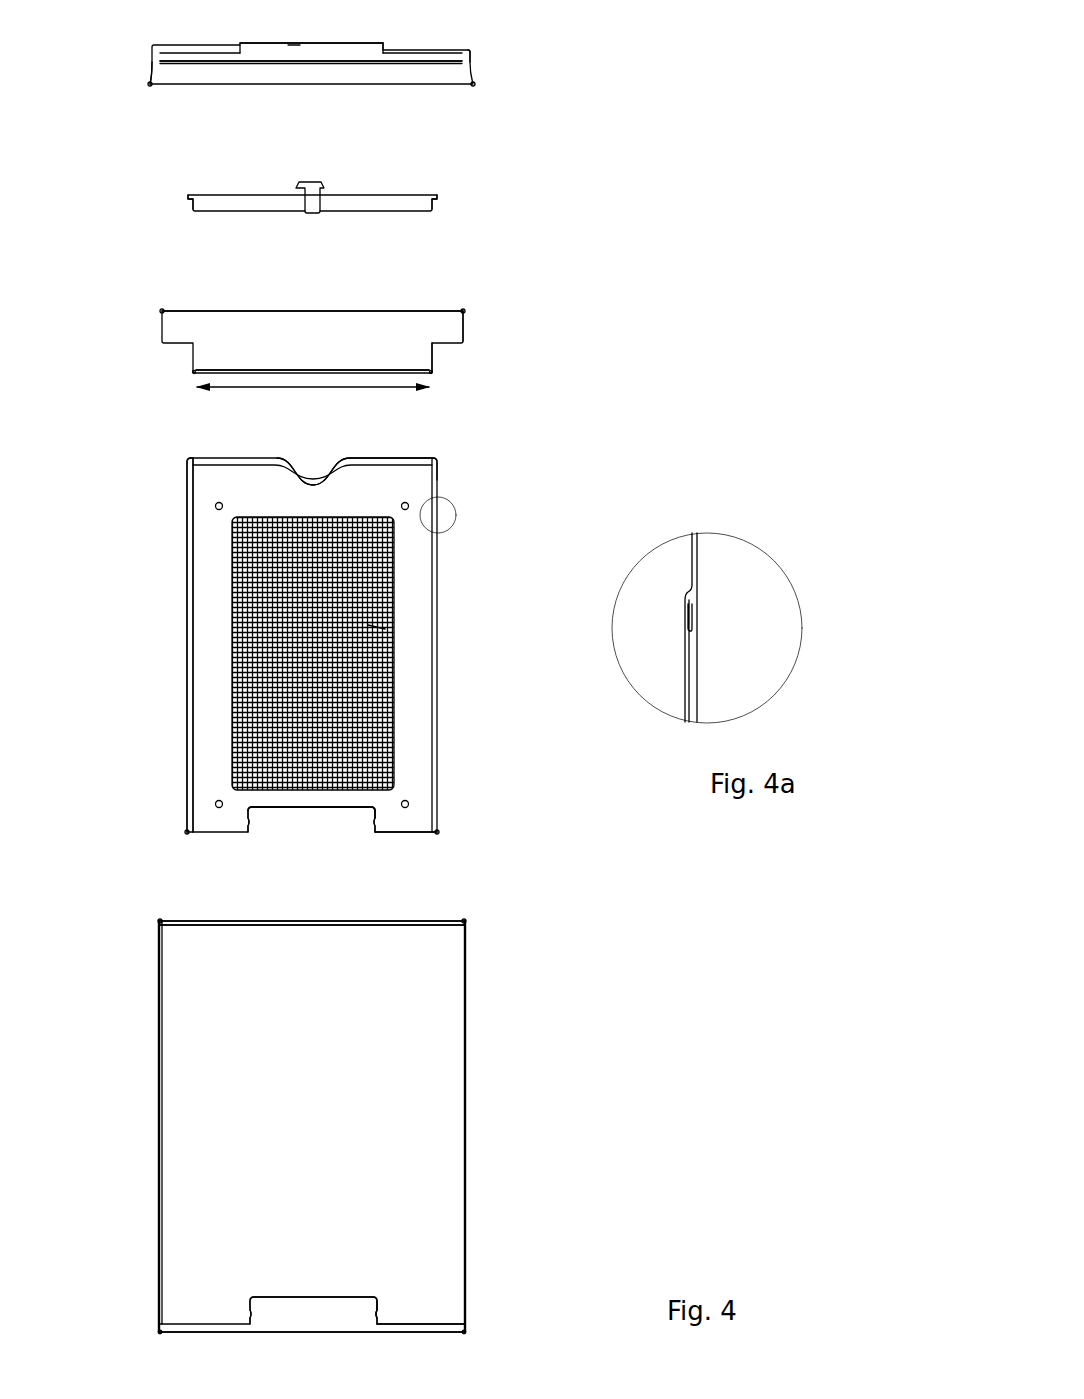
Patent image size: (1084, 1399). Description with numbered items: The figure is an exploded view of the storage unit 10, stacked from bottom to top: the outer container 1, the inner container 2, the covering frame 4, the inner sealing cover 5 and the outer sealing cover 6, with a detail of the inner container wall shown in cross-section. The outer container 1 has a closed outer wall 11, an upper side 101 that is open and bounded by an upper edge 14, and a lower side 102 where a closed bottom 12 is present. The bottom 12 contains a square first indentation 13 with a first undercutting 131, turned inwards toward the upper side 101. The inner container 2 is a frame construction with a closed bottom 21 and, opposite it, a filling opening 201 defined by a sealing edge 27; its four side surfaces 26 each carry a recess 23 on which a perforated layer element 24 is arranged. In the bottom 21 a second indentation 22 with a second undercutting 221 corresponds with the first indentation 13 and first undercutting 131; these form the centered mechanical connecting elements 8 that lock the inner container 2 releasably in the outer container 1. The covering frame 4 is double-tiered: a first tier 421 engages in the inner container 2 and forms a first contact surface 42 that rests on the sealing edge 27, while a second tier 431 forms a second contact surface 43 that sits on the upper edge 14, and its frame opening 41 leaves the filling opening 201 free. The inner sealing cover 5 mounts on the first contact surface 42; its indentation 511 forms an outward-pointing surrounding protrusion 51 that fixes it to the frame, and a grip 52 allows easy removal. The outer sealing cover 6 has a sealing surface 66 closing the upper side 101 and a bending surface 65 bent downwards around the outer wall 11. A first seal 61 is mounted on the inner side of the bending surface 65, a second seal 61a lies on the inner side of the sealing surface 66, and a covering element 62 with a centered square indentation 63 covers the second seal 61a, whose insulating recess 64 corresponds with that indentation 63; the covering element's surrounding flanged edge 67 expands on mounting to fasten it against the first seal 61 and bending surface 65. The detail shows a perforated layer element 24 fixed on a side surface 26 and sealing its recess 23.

In FIG. 4, the outer container 1 is at (625, 1080).
In FIG. 4, the inner container 2 is at (548, 532).
In FIG. 4, the covering frame 4 is at (580, 340).
In FIG. 4, the inner sealing cover 5 is at (515, 195).
In FIG. 4, the outer sealing cover 6 is at (636, 45).
In FIG. 4, the connecting elements 8 is at (325, 807).
In FIG. 4, the storage unit 10 is at (715, 385).
In FIG. 4, the outer wall 11 is at (300, 1099).
In FIG. 4, the bottom 12 is at (413, 1325).
In FIG. 4, the first indentation 13 is at (378, 1297).
In FIG. 4, the upper edge 14 is at (466, 923).
In FIG. 4, the closed bottom 21 is at (387, 833).
In FIG. 4, the second indentation 22 is at (377, 813).
In FIG. 4, the recess 23 is at (395, 568).
In FIG. 4, the perforated layer element 24 is at (368, 625).
In FIG. 4A, the perforated layer element 24 is at (692, 650).
In FIG. 4, the side surface 26 is at (197, 659).
In FIG. 4A, the side surface 26 is at (694, 556).
In FIG. 4, the sealing edge 27 is at (452, 458).
In FIG. 4, the frame opening 41 is at (267, 387).
In FIG. 4, the first contact surface 42 is at (443, 345).
In FIG. 4, the second contact surface 43 is at (463, 312).
In FIG. 4, the protrusion 51 is at (435, 197).
In FIG. 4, the grip 52 is at (313, 188).
In FIG. 4, the first seal 61 is at (470, 62).
In FIG. 4, the covering element 62 is at (437, 56).
In FIG. 4, the indentation 63 is at (293, 46).
In FIG. 4, the insulating recess 64 is at (385, 50).
In FIG. 4, the bending surface 65 is at (152, 63).
In FIG. 4, the sealing surface 66 is at (294, 46).
In FIG. 4, the flanged edge 67 is at (467, 62).
In FIG. 4, the upper side 101 is at (339, 865).
In FIG. 4, the lower side 102 is at (173, 1340).
In FIG. 4, the first undercutting 131 is at (376, 1308).
In FIG. 4, the filling opening 201 is at (308, 465).
In FIG. 4, the second undercutting 221 is at (370, 818).
In FIG. 4, the first tier 421 is at (433, 363).
In FIG. 4, the second tier 431 is at (462, 330).
In FIG. 4, the indentation 511 is at (197, 202).
In FIG. 4, the second seal 61a is at (237, 45).